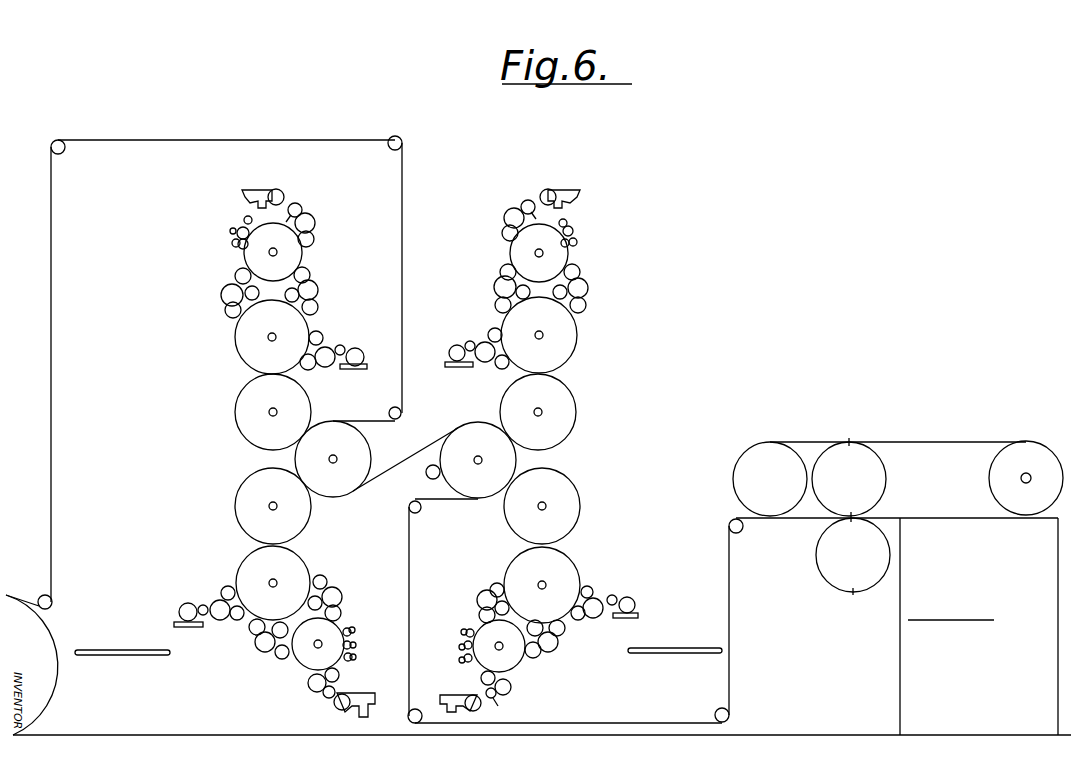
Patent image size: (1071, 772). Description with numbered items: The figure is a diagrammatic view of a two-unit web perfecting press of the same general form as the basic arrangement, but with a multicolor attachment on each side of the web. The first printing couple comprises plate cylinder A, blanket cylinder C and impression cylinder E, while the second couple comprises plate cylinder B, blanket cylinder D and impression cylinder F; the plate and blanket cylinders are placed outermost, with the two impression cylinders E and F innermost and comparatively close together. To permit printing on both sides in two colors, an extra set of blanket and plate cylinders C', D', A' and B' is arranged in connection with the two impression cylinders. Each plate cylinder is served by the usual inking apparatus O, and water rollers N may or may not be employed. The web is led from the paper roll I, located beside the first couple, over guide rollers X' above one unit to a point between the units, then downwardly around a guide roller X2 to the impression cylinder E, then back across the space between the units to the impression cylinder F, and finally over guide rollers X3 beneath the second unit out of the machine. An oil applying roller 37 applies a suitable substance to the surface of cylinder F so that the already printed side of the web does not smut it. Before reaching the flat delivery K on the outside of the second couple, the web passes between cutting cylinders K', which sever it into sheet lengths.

The plate cylinder A is at (272, 337).
The extra plate cylinder A' is at (273, 583).
The plate cylinder B is at (539, 335).
The extra plate cylinder B' is at (542, 585).
The blanket cylinder C is at (273, 412).
The extra blanket cylinder C' is at (273, 506).
The blanket cylinder D is at (538, 412).
The extra blanket cylinder D' is at (542, 506).
The impression cylinder E is at (333, 459).
The impression cylinder F is at (478, 460).
The inking apparatus O is at (590, 247).
The water rollers N is at (396, 474).
The guide rollers X' is at (227, 360).
The guide roller X2 is at (401, 414).
The guide rollers X3 is at (729, 528).
The oil applying roller 37 is at (425, 476).
The paper roll I is at (52, 690).
The delivery K is at (916, 530).
The cutting cylinders K' is at (811, 502).